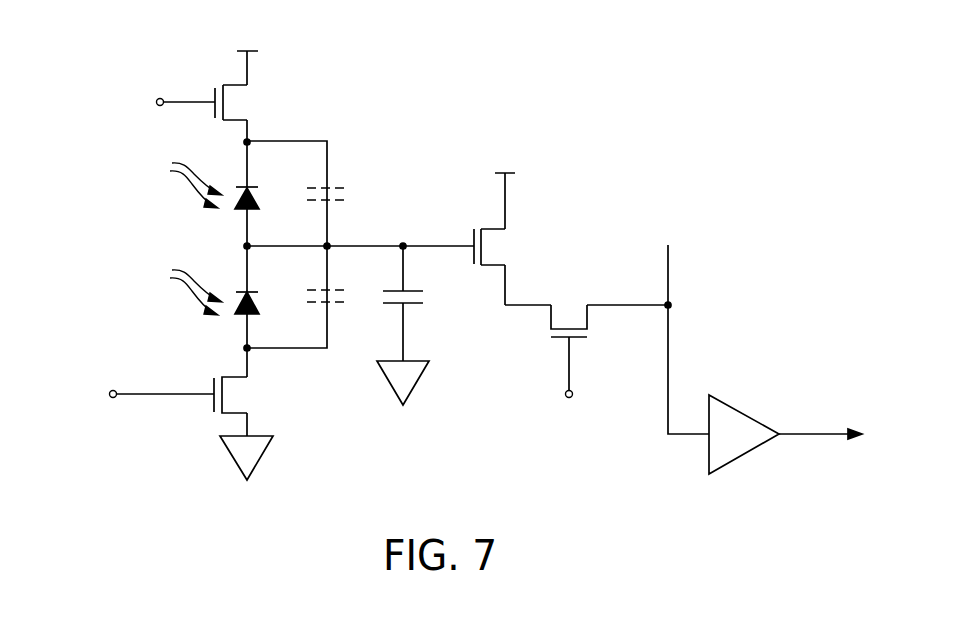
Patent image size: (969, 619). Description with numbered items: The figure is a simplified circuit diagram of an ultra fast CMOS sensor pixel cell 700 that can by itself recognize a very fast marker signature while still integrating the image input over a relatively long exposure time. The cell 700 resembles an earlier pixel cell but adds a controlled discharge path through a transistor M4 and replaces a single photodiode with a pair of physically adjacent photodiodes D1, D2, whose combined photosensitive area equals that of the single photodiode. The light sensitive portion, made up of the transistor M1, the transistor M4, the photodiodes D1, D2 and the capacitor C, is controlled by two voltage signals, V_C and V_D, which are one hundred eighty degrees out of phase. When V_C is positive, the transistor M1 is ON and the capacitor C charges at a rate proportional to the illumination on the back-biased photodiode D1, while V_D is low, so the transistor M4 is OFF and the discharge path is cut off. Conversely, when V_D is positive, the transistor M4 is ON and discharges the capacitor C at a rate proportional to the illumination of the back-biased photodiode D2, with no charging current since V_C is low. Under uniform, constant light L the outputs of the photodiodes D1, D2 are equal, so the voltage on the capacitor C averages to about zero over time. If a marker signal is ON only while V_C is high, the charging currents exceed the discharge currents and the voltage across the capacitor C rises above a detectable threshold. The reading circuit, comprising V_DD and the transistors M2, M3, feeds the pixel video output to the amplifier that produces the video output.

The ultra fast pixel cell 700 is at (558, 93).
The transistor M1 is at (213, 103).
The transistor M2 is at (500, 247).
The transistor M3 is at (569, 341).
The controlled discharge path transistor M4 is at (189, 395).
The photodiode D1 is at (261, 202).
The photodiode D2 is at (261, 308).
The capacitor C is at (399, 319).
The light L is at (185, 231).